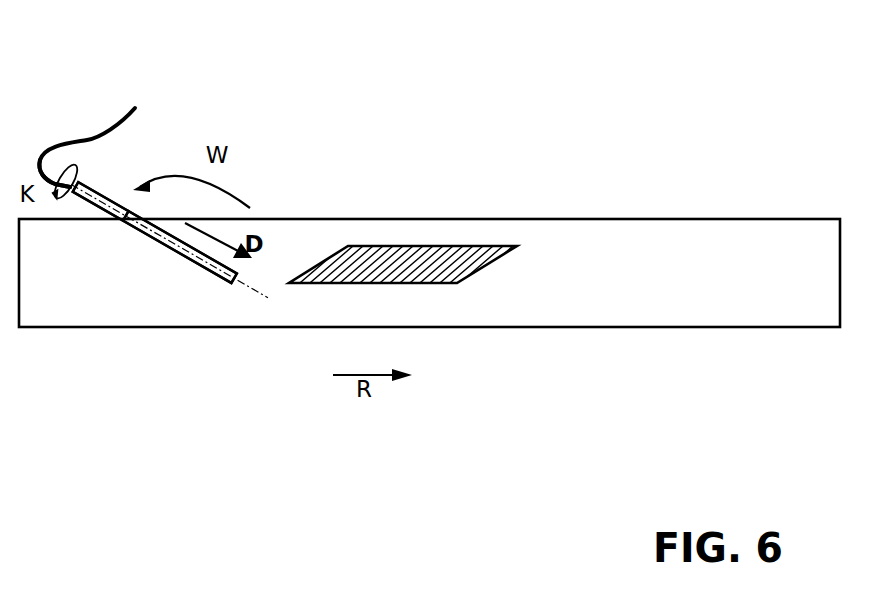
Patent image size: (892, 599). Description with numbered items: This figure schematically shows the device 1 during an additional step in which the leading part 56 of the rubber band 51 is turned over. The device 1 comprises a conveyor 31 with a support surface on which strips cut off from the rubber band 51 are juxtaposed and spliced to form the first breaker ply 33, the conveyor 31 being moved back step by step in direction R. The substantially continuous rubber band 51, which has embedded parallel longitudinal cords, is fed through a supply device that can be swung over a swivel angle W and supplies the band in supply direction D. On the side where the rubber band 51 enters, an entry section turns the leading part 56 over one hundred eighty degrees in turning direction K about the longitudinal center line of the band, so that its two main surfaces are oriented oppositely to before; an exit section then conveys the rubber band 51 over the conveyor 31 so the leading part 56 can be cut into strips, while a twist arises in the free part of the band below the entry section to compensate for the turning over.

The device 1 is at (74, 103).
The conveyor 31 is at (558, 310).
The first breaker ply 33 is at (430, 249).
The rubber band 51 is at (125, 108).
The leading part 56 is at (68, 183).